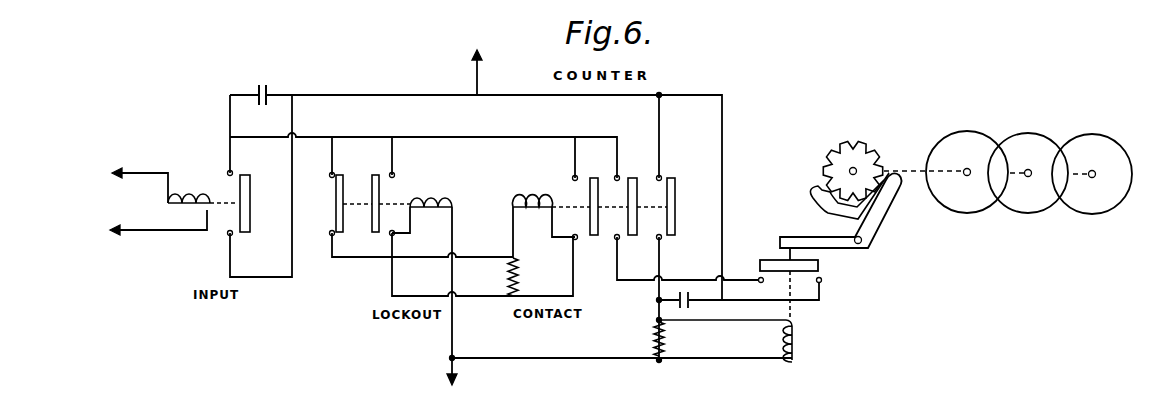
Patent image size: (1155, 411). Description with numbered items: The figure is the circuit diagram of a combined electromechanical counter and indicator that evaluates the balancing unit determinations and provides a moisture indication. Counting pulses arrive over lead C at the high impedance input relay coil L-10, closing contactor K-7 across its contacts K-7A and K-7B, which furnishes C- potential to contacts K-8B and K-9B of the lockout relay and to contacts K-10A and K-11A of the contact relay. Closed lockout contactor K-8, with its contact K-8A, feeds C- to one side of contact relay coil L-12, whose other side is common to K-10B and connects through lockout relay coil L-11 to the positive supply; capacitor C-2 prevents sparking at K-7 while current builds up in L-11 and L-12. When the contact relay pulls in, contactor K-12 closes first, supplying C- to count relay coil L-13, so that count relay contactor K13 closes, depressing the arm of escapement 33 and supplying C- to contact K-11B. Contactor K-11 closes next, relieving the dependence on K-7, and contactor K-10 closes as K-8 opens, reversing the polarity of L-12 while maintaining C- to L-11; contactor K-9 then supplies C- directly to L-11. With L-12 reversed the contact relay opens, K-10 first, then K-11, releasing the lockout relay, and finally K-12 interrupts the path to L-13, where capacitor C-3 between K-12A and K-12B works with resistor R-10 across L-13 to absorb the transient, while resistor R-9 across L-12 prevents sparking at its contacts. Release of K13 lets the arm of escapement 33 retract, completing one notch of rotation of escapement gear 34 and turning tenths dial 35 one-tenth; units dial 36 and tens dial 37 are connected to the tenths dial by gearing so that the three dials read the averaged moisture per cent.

The capacitor C-2 is at (260, 85).
The capacitor C-3 is at (720, 294).
The contactor of the high impedance input relay K-7 is at (262, 203).
The contact of the high impedance input relay K-7A is at (250, 165).
The contact of the high impedance input relay K-7B is at (250, 245).
The contactor of the lockout relay K-8 is at (344, 173).
The contact of the lockout relay K-8A is at (327, 245).
The contact of the lockout relay K-8B is at (327, 166).
The contactor of the lockout relay K-9 is at (391, 173).
The contact of the lockout relay K-9B is at (389, 206).
The contactor of the contact relay K-10 is at (597, 176).
The contact of the contact relay K-10A is at (575, 170).
The contact of the contact relay K-10B is at (575, 248).
The contactor of the contact relay K-11 is at (647, 176).
The contact of the contact relay K-11A is at (625, 170).
The contact of the contact relay K-11B is at (623, 248).
The contactor of the contact relay K-12 is at (682, 165).
The contact of the contact relay K-12A is at (680, 170).
The contact of the contact relay K-12B is at (680, 248).
The count relay contactor K13 is at (818, 265).
The high impedance input relay coil L-10 is at (202, 185).
The lockout relay coil L-11 is at (435, 191).
The contact relay coil L-12 is at (546, 191).
The count relay coil L-13 is at (749, 341).
The resistor R-9 is at (529, 277).
The resistor R-10 is at (638, 339).
The escapement 33 is at (828, 218).
The escapement gear 34 is at (876, 152).
The tenths dial 35 is at (966, 213).
The units dial 36 is at (1026, 213).
The tens dial 37 is at (1089, 214).
The lead C is at (148, 227).
The C- potential supply C- is at (464, 72).